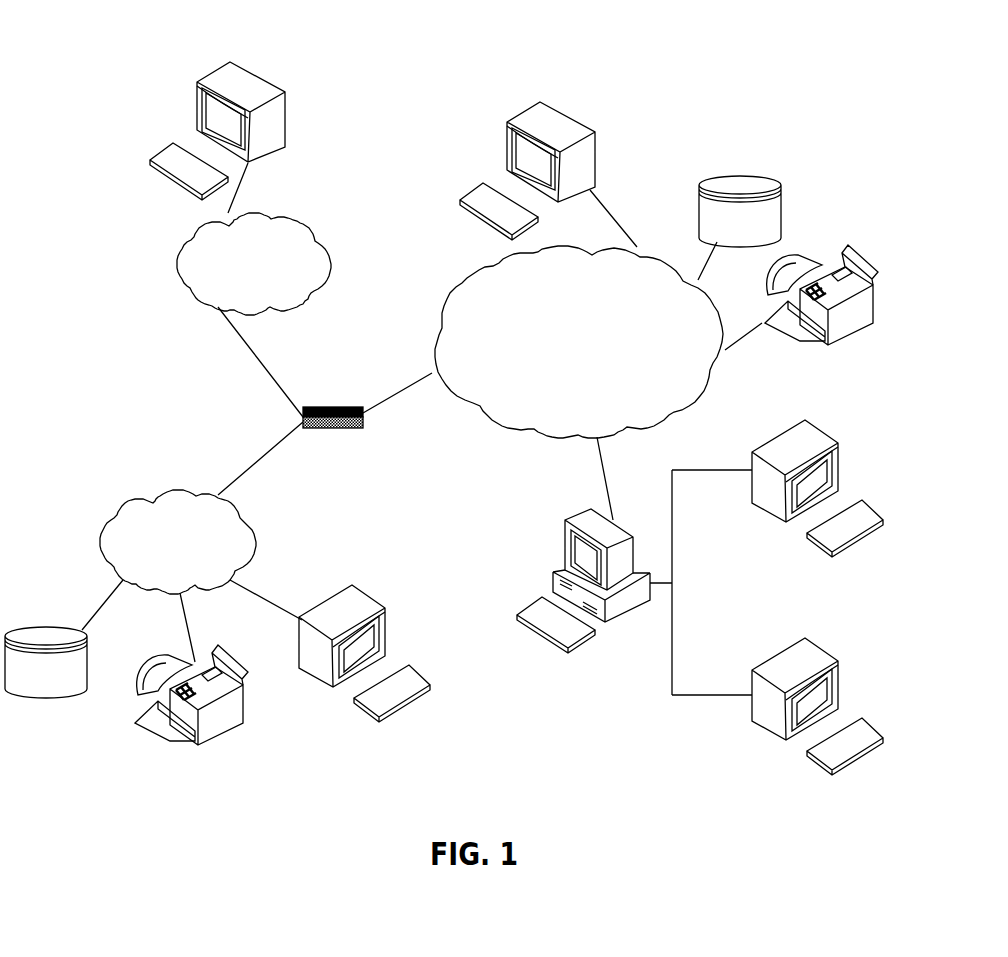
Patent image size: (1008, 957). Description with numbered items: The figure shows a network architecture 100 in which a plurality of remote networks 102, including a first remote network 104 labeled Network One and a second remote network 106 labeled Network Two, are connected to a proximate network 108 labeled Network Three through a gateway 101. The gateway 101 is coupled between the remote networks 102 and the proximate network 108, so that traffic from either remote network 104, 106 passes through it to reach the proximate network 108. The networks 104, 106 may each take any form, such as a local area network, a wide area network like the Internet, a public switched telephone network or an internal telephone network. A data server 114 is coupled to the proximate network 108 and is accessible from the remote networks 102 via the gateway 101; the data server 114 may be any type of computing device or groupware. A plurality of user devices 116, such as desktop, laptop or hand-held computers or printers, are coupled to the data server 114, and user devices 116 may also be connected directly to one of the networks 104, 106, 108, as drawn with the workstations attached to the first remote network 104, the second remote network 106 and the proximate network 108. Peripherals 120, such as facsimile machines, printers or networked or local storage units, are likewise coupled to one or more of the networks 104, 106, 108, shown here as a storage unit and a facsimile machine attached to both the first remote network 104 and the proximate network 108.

The architecture 100 is at (137, 47).
The gateway 101 is at (313, 403).
The remote networks 102 is at (163, 320).
The first remote network 104 is at (110, 512).
The second remote network 106 is at (323, 232).
The proximate network 108 is at (685, 410).
The data server 114 is at (565, 535).
The user devices 116 is at (285, 103).
The peripheral 120 is at (48, 694).